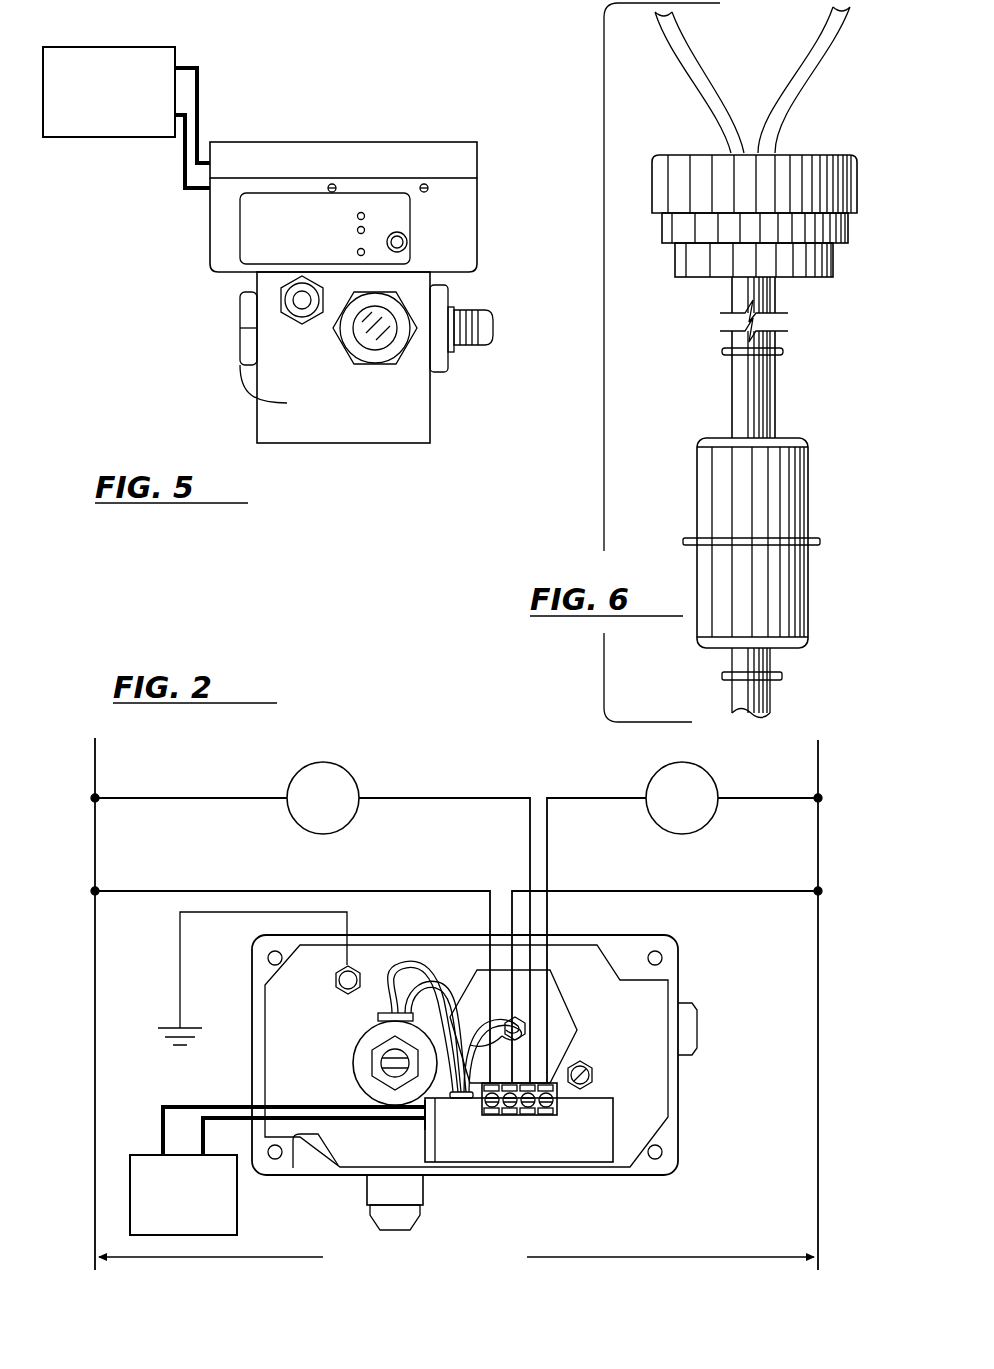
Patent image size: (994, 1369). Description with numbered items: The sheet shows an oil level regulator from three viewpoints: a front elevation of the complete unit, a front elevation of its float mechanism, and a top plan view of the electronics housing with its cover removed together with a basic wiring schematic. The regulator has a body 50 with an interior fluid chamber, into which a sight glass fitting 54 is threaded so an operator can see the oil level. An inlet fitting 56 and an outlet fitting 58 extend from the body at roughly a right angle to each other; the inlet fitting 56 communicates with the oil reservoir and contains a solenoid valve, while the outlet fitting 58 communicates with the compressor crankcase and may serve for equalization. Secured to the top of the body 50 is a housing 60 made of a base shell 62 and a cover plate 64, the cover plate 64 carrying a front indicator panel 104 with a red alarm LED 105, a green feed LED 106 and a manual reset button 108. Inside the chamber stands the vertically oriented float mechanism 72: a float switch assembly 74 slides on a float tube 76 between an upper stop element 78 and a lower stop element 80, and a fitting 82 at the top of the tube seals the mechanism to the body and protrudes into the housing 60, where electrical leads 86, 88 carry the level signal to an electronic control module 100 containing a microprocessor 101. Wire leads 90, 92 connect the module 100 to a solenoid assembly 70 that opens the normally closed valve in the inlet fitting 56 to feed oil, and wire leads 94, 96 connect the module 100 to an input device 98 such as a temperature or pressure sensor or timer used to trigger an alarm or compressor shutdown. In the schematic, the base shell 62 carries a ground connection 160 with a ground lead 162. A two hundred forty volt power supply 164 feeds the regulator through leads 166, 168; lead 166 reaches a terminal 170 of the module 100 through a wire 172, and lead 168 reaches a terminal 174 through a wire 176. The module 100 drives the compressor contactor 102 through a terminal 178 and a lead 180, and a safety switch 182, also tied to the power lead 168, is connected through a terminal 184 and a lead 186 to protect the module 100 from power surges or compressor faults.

In FIG. 5, the body 50 is at (430, 425).
In FIG. 5, the sight glass fitting 54 is at (380, 330).
In FIG. 5, the inlet fitting 56 is at (282, 290).
In FIG. 2, the inlet fitting 56 is at (430, 1187).
In FIG. 5, the outlet fitting 58 is at (467, 307).
In FIG. 2, the housing 60 is at (627, 1183).
In FIG. 5, the base shell 62 is at (465, 192).
In FIG. 2, the base shell 62 is at (680, 980).
In FIG. 5, the cover plate 64 is at (433, 157).
In FIG. 2, the solenoid assembly 70 is at (348, 1047).
In FIG. 6, the float mechanism 72 is at (714, 412).
In FIG. 2, the float mechanism 72 is at (565, 989).
In FIG. 6, the float switch assembly 74 is at (765, 588).
In FIG. 6, the float tube 76 is at (737, 293).
In FIG. 6, the upper stop element 78 is at (783, 353).
In FIG. 6, the lower stop element 80 is at (782, 674).
In FIG. 6, the fitting 82 is at (858, 190).
In FIG. 2, the fitting 82 is at (555, 1030).
In FIG. 6, the electrical lead 86 is at (682, 72).
In FIG. 2, the electrical lead 86 is at (502, 1108).
In FIG. 6, the electrical lead 88 is at (818, 50).
In FIG. 2, the electrical lead 88 is at (463, 1040).
In FIG. 2, the wire lead 90 is at (392, 1002).
In FIG. 2, the wire lead 92 is at (462, 950).
In FIG. 5, the wire lead 94 is at (185, 163).
In FIG. 2, the wire lead 94 is at (227, 1117).
In FIG. 5, the wire lead 96 is at (198, 103).
In FIG. 2, the wire lead 96 is at (205, 1105).
In FIG. 5, the input device 98 is at (100, 47).
In FIG. 2, the input device 98 is at (130, 1173).
In FIG. 2, the electronic control module 100 is at (622, 1113).
In FIG. 2, the microprocessor 101 is at (432, 1142).
In FIG. 2, the compressor contactor 102 is at (318, 785).
In FIG. 5, the indicator panel 104 is at (371, 208).
In FIG. 5, the alarm LED 105 is at (357, 232).
In FIG. 5, the feed LED 106 is at (365, 253).
In FIG. 5, the manual reset button 108 is at (402, 238).
In FIG. 2, the ground connection 160 is at (335, 979).
In FIG. 2, the electrical lead 162 is at (178, 1012).
In FIG. 2, the power supply 164 is at (587, 1258).
In FIG. 2, the electrical lead 166 is at (95, 995).
In FIG. 2, the electrical lead 168 is at (818, 1020).
In FIG. 2, the terminal 170 is at (495, 1107).
In FIG. 2, the wire 172 is at (232, 890).
In FIG. 2, the terminal 174 is at (512, 1110).
In FIG. 2, the wire 176 is at (613, 891).
In FIG. 2, the terminal 178 is at (545, 1115).
In FIG. 2, the lead 180 is at (455, 797).
In FIG. 2, the safety switch 182 is at (687, 763).
In FIG. 2, the terminal 184 is at (588, 1070).
In FIG. 2, the lead 186 is at (585, 797).